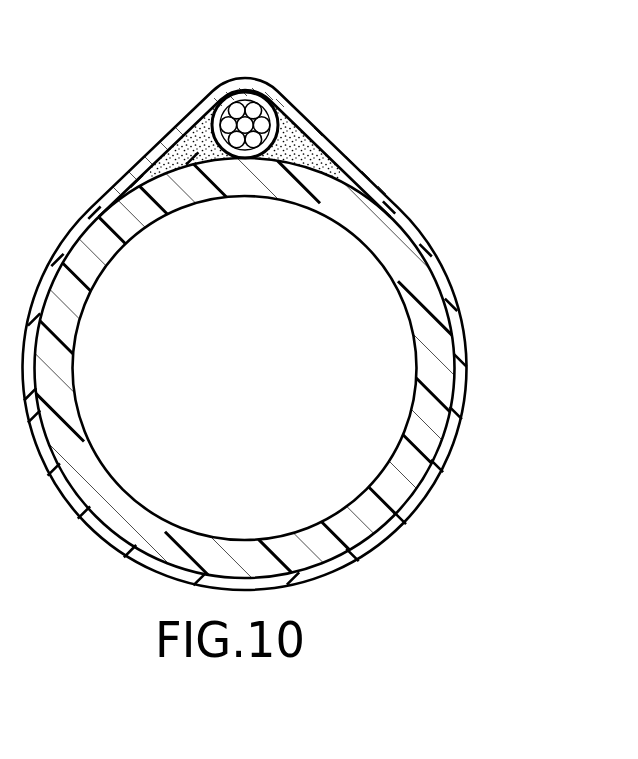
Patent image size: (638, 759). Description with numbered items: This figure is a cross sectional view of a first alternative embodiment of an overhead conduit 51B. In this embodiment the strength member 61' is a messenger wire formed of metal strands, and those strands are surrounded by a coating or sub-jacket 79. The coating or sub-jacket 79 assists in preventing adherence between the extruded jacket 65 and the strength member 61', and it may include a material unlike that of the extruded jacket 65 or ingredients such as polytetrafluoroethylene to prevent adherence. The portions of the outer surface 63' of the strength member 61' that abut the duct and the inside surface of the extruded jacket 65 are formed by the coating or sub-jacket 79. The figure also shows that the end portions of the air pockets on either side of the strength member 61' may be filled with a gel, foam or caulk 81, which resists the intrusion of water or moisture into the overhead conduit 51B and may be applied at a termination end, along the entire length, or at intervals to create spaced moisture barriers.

The overhead conduit 51B is at (435, 111).
The strength member 61' is at (244, 326).
The outer surface of the strength member 63' is at (290, 116).
The extruded jacket 65 is at (330, 138).
The coating or sub-jacket 79 is at (256, 103).
The gel, foam or caulk 81 is at (190, 167).